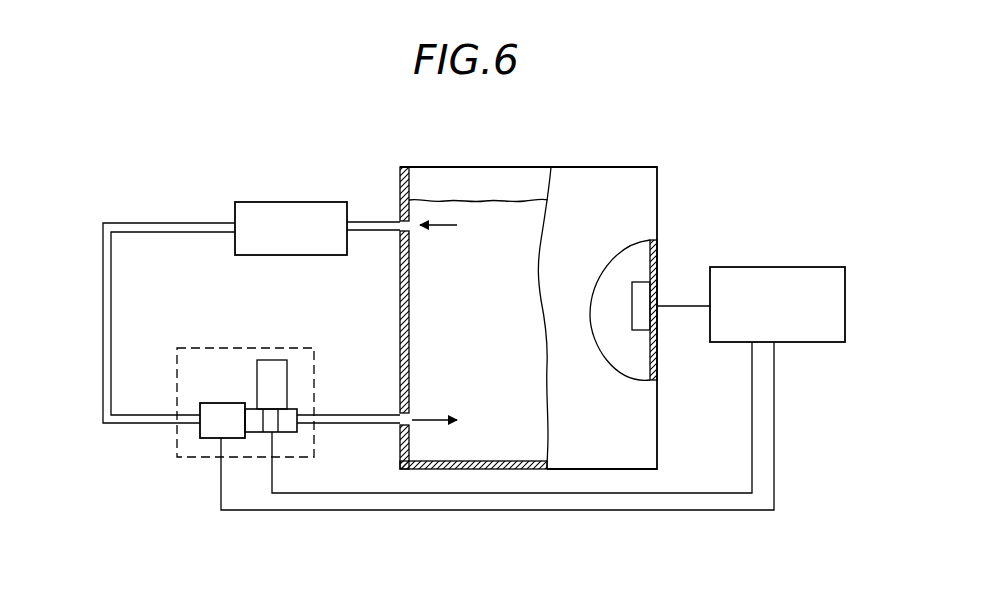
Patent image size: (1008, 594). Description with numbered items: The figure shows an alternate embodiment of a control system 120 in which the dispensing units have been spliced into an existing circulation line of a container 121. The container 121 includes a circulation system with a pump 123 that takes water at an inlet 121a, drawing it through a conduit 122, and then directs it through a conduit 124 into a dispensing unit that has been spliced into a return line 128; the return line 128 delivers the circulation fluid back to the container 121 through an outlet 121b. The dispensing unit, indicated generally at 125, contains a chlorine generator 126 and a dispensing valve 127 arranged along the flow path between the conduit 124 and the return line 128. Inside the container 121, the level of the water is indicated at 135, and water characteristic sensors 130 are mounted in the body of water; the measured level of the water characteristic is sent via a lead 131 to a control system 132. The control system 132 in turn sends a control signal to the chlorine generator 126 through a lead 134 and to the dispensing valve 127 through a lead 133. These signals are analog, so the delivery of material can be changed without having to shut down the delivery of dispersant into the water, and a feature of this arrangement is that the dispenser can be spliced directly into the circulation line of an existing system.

The control system 120 is at (529, 151).
The container 121 is at (659, 178).
The inlet 121a is at (412, 233).
The outlet 121b is at (412, 425).
The conduit 122 is at (374, 221).
The pump 123 is at (267, 202).
The conduit 124 is at (102, 338).
The valve assembly 125 is at (256, 338).
The chlorine generator 126 is at (203, 440).
The dispensing valve 127 is at (290, 410).
The return line 128 is at (345, 415).
The water characteristic sensors 130 is at (640, 297).
The lead 131 is at (684, 308).
The control system 132 is at (767, 267).
The lead 133 is at (354, 492).
The lead 134 is at (312, 512).
The liquid level 135 is at (473, 198).